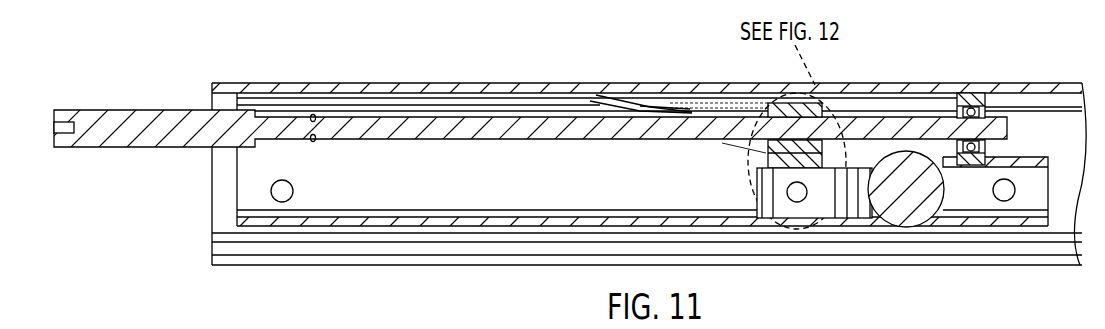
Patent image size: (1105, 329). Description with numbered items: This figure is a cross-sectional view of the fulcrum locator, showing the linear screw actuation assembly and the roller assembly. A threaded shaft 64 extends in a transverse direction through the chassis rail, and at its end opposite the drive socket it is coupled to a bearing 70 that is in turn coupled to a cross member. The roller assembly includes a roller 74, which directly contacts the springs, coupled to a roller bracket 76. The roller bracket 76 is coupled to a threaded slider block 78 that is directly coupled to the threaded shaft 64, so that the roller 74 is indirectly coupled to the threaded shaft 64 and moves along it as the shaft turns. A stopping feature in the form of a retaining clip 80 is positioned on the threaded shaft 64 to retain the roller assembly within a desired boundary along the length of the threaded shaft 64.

The threaded shaft 64 is at (397, 126).
The bearing 70 is at (968, 98).
The roller 74 is at (902, 204).
The roller bracket 76 is at (815, 204).
The threaded slider block 78 is at (768, 104).
The retaining clip 80 is at (318, 143).